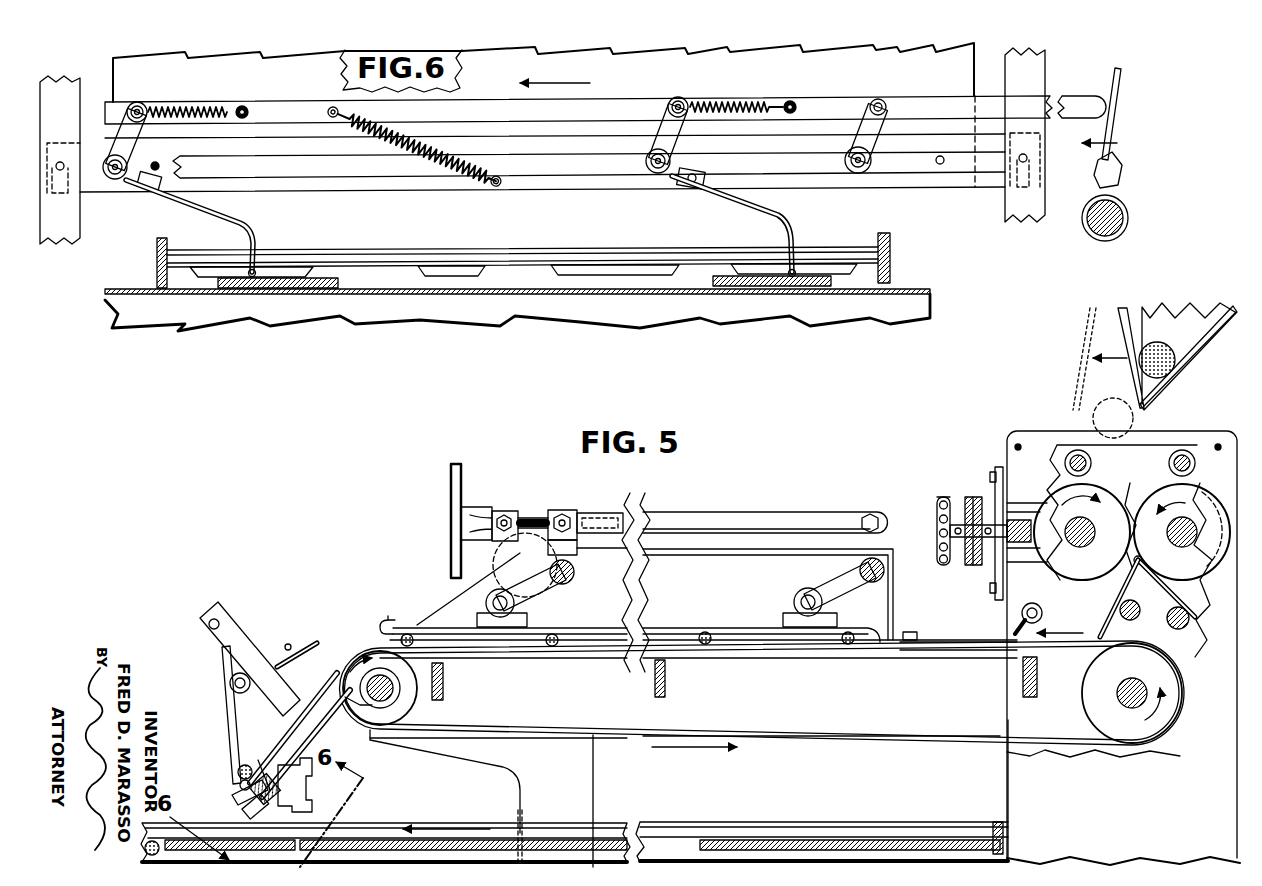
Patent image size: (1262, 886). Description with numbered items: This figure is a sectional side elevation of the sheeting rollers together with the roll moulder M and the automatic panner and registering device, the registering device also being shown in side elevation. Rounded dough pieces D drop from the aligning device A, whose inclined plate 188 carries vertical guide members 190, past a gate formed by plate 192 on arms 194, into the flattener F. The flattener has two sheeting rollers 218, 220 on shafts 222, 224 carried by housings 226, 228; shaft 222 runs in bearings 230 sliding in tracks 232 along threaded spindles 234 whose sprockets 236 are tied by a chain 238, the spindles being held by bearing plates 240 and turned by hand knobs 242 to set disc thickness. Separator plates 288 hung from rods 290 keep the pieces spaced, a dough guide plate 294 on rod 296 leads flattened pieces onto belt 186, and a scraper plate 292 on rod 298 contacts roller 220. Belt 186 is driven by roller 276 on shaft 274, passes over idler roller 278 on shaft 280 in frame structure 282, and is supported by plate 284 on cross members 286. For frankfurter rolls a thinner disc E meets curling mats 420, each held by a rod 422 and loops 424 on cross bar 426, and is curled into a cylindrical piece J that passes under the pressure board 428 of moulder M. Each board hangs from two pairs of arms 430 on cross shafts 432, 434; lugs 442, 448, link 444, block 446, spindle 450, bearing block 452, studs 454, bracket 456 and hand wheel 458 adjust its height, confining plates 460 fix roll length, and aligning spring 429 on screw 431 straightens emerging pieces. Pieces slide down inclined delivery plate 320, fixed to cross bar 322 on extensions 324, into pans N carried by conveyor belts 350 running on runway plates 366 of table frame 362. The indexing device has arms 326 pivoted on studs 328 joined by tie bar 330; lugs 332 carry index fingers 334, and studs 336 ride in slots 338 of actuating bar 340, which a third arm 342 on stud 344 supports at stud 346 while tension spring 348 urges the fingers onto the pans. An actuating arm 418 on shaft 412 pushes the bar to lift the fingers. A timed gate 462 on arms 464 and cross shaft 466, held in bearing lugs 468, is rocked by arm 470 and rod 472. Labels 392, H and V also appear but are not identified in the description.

In FIG. 5, the delivery belt 186 is at (625, 738).
In FIG. 5, the inclined plate 188 is at (1220, 336).
In FIG. 5, the guide members 190 is at (1236, 312).
In FIG. 5, the gate plate 192 is at (1133, 398).
In FIG. 5, the arms 194 is at (1128, 328).
In FIG. 5, the sheeting roller 218 is at (1062, 498).
In FIG. 5, the sheeting roller 220 is at (1130, 585).
In FIG. 5, the shaft 222 is at (1082, 550).
In FIG. 5, the shaft 224 is at (1175, 528).
In FIG. 5, the housing 226 is at (1015, 440).
In FIG. 5, the housing 228 is at (1170, 476).
In FIG. 5, the bearings 230 is at (1058, 518).
In FIG. 5, the tracks 232 is at (997, 480).
In FIG. 5, the spindle 234 is at (978, 567).
In FIG. 5, the sprocket 236 is at (992, 478).
In FIG. 5, the chain 238 is at (947, 486).
In FIG. 5, the bearing plates 240 is at (1000, 600).
In FIG. 5, the hand knob 242 is at (940, 566).
In FIG. 5, the horizontal shaft 274 is at (1127, 698).
In FIG. 5, the roller 276 is at (1142, 757).
In FIG. 5, the idler roller 278 is at (400, 702).
In FIG. 5, the horizontal shaft 280 is at (395, 733).
In FIG. 5, the frame structure 282 is at (605, 778).
In FIG. 5, the plate 284 is at (588, 655).
In FIG. 5, the cross members 286 is at (444, 690).
In FIG. 5, the separator plates 288 is at (1085, 452).
In FIG. 5, the parallel rods 290 is at (1091, 465).
In FIG. 5, the scraper plate 292 is at (1145, 585).
In FIG. 5, the dough guide plate 294 is at (1105, 622).
In FIG. 5, the horizontal rod 296 is at (1130, 622).
In FIG. 5, the horizontal rod 298 is at (1197, 643).
In FIG. 6, the inclined delivery plate 320 is at (967, 86).
In FIG. 5, the inclined delivery plate 320 is at (303, 647).
In FIG. 6, the cross bar 322 is at (330, 192).
In FIG. 5, the cross bar 322 is at (262, 767).
In FIG. 6, the inclined extensions 324 is at (70, 232).
In FIG. 5, the inclined extensions 324 is at (333, 700).
In FIG. 6, the arms 326 is at (230, 158).
In FIG. 6, the studs 328 is at (116, 180).
In FIG. 6, the tie bar 330 is at (137, 192).
In FIG. 6, the lug 332 is at (160, 195).
In FIG. 6, the index finger 334 is at (256, 242).
In FIG. 5, the index finger 334 is at (237, 830).
In FIG. 6, the stud 336 is at (146, 107).
In FIG. 6, the slots 338 is at (113, 100).
In FIG. 6, the actuating bar 340 is at (330, 104).
In FIG. 5, the actuating bar 340 is at (350, 706).
In FIG. 6, the third arm 342 is at (873, 145).
In FIG. 6, the stud 344 is at (865, 175).
In FIG. 6, the stud 346 is at (890, 107).
In FIG. 6, the tension spring 348 is at (397, 156).
In FIG. 6, the conveyor belts 350 is at (320, 290).
In FIG. 5, the conveyor belts 350 is at (505, 842).
In FIG. 6, the table frame 362 is at (600, 303).
In FIG. 6, the belt runway plate 366 is at (232, 290).
In FIG. 6, the end plate 392 is at (157, 263).
In FIG. 5, the end plate 392 is at (577, 813).
In FIG. 6, the horizontal shaft 412 is at (1130, 218).
In FIG. 6, the actuating arm 418 is at (1118, 150).
In FIG. 5, the actuating arm 418 is at (305, 795).
In FIG. 5, the curling mats 420 is at (942, 640).
In FIG. 5, the rod 422 is at (1013, 648).
In FIG. 5, the loops 424 is at (1020, 655).
In FIG. 5, the cross bar 426 is at (1043, 609).
In FIG. 5, the pressure board 428 is at (686, 609).
In FIG. 5, the aligning spring 429 is at (385, 625).
In FIG. 5, the arms 430 is at (530, 603).
In FIG. 5, the screw 431 is at (407, 599).
In FIG. 5, the cross shaft 432 is at (880, 588).
In FIG. 5, the cross shaft 434 is at (576, 572).
In FIG. 5, the upright lug 442 is at (868, 538).
In FIG. 5, the link 444 is at (672, 518).
In FIG. 5, the block 446 is at (562, 514).
In FIG. 5, the lug 448 is at (577, 547).
In FIG. 5, the spindle 450 is at (538, 512).
In FIG. 5, the bearing block 452 is at (484, 507).
In FIG. 5, the studs 454 is at (504, 514).
In FIG. 5, the forked bracket 456 is at (488, 575).
In FIG. 5, the hand wheel 458 is at (473, 453).
In FIG. 5, the confining plates 460 is at (687, 560).
In FIG. 5, the timed gate 462 is at (240, 787).
In FIG. 5, the arms 464 is at (222, 722).
In FIG. 5, the cross shaft 466 is at (208, 624).
In FIG. 5, the bearing lugs 468 is at (230, 650).
In FIG. 5, the arm 470 is at (231, 684).
In FIG. 5, the rod 472 is at (290, 645).
In FIG. 5, the aligning device A is at (1178, 305).
In FIG. 5, the rounded dough pieces D is at (1167, 420).
In FIG. 5, the dough disc E is at (1042, 648).
In FIG. 5, the flattener F is at (1188, 424).
In FIG. 5, the lever arm H is at (278, 638).
In FIG. 5, the cylindrical dough piece J is at (409, 634).
In FIG. 5, the roll moulder M is at (742, 507).
In FIG. 6, the pans N is at (530, 280).
In FIG. 5, the pans N is at (890, 822).
In FIG. 6, the conveyor V is at (437, 290).
In FIG. 5, the conveyor V is at (362, 850).